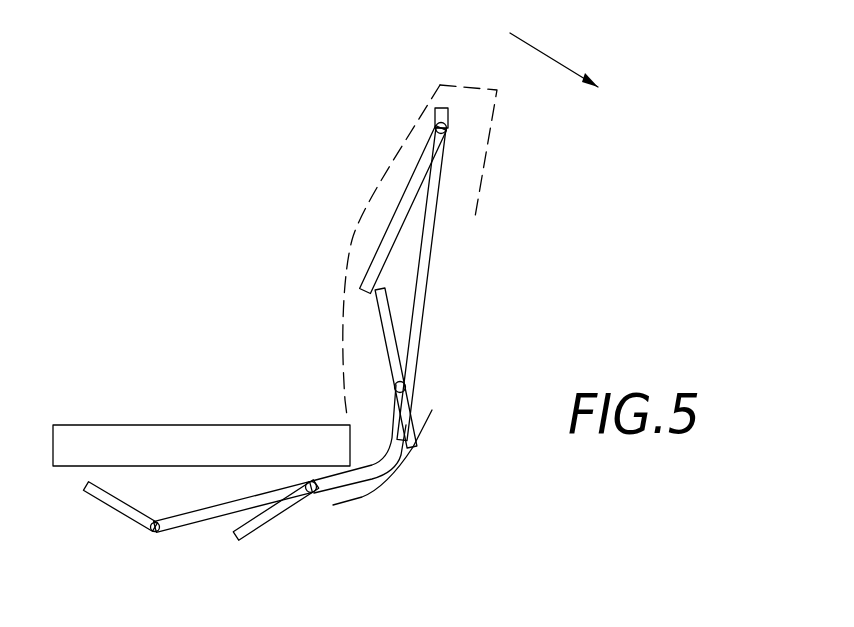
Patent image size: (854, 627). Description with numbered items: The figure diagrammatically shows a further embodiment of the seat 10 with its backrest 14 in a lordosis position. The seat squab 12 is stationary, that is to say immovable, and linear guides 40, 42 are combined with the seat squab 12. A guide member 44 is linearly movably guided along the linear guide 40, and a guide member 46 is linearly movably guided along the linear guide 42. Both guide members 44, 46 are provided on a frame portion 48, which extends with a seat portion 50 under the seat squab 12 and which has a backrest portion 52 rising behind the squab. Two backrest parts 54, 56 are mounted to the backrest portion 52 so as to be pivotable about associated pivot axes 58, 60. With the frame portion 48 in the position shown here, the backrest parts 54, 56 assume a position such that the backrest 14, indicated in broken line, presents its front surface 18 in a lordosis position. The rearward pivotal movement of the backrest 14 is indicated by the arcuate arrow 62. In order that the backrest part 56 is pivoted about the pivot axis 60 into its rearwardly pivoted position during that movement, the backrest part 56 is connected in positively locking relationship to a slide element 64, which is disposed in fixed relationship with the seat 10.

The seat 10 is at (211, 276).
The seat squab 12 is at (151, 428).
The backrest 14 is at (362, 236).
The front surface 18 is at (372, 186).
The linear guide 40 is at (107, 508).
The linear guide 42 is at (263, 530).
The guide member 44 is at (151, 532).
The guide member 46 is at (312, 493).
The frame portion 48 is at (388, 448).
The seat portion 50 is at (234, 503).
The backrest portion 52 is at (422, 257).
The backrest part 54 is at (405, 187).
The backrest part 56 is at (385, 322).
The pivot axis 58 is at (447, 128).
The pivot axis 60 is at (406, 388).
The arcuate arrow 62 is at (553, 55).
The slide element 64 is at (366, 498).